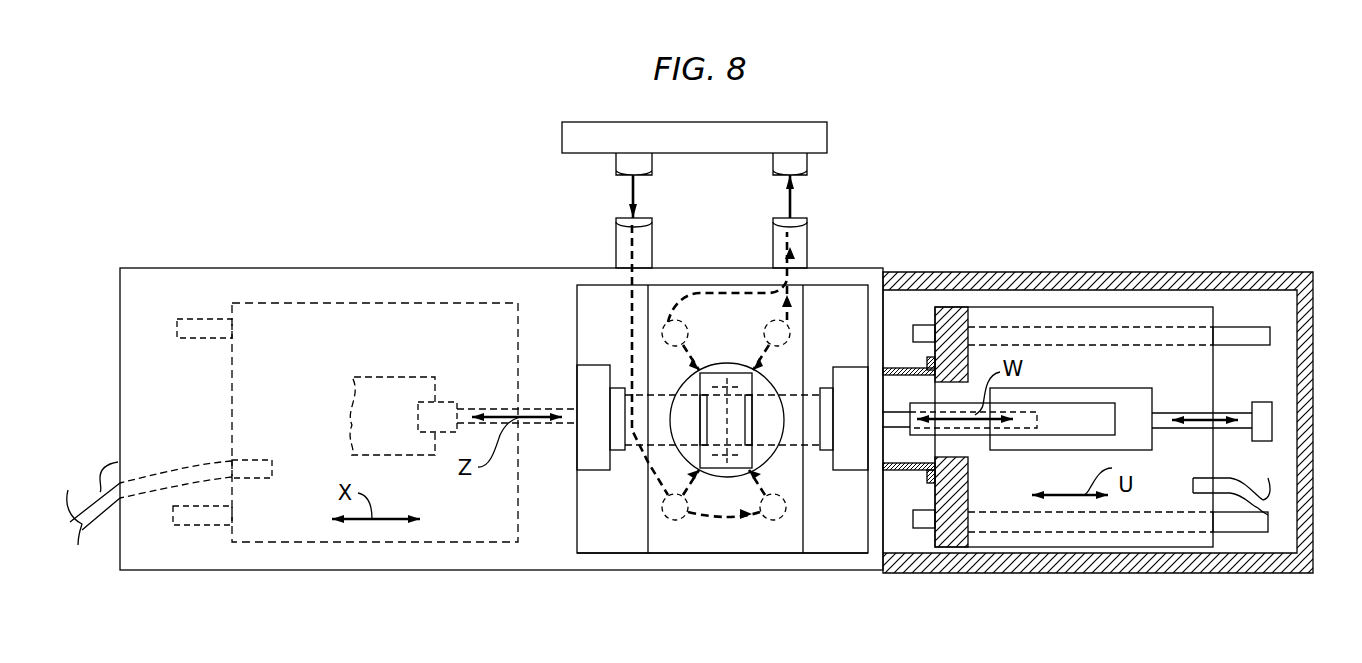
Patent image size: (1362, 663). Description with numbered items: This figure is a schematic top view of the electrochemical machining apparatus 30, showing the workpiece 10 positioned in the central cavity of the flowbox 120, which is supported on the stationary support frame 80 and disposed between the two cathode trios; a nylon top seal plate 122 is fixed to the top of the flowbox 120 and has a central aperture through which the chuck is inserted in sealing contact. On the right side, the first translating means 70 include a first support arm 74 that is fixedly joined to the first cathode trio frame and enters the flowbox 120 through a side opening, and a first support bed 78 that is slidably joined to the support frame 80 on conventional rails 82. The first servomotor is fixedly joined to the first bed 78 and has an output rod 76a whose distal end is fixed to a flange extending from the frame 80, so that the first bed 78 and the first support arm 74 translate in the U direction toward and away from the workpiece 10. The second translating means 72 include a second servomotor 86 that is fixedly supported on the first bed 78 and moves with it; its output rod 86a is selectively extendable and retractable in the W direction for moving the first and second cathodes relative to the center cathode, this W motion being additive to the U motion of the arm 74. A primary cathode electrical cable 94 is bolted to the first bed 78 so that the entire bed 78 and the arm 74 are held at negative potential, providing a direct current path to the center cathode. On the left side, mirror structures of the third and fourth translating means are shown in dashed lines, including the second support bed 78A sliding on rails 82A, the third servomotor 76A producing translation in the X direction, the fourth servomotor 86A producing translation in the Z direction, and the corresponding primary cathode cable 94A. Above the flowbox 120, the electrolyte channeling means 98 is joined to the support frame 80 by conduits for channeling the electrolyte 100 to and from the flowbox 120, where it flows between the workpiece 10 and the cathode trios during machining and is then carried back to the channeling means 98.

The apparatus 30 is at (80, 305).
The second support bed 78A is at (319, 398).
The third servomotor 76A is at (392, 377).
The fourth servomotor 86A is at (447, 402).
The primary cathode cable 94A is at (118, 462).
The rails 82A is at (183, 527).
The electrolyte channeling means 98 is at (562, 130).
The electrolyte 100 is at (632, 197).
The workpiece 10 is at (729, 370).
The flowbox 120 is at (688, 432).
The top seal plate 122 is at (733, 547).
The first support arm 74 is at (810, 450).
The output rod 86a is at (895, 410).
The first support bed 78 is at (1072, 307).
The output rod 76a is at (1228, 412).
The rails 82 is at (1248, 342).
The second translating means 72 is at (1112, 385).
The second servomotor 86 is at (1058, 404).
The primary cathode cable 94 is at (1253, 482).
The first translating means 70 is at (942, 547).
The support frame 80 is at (1100, 567).